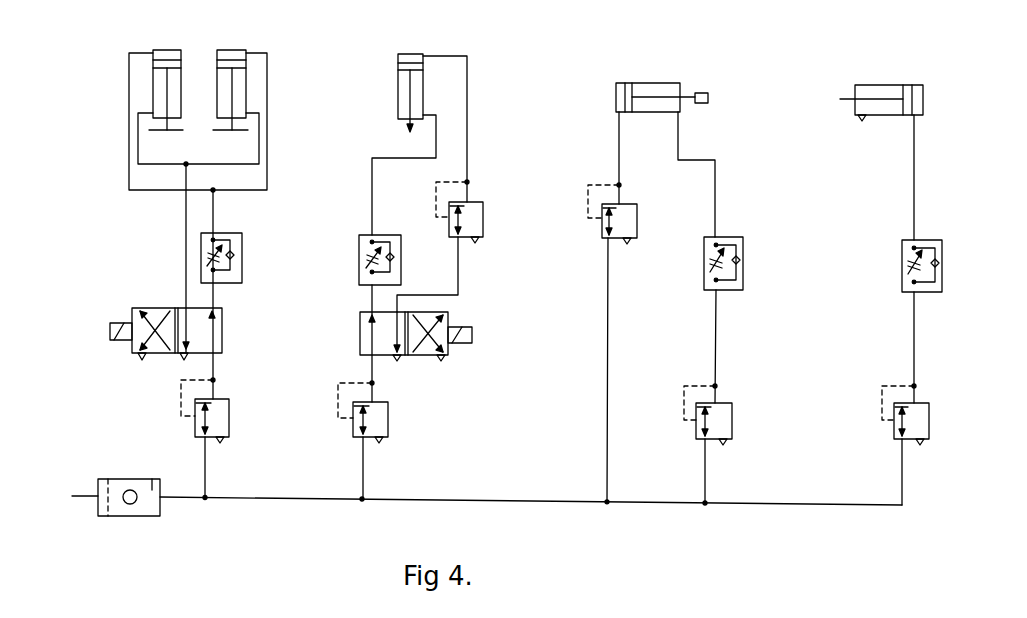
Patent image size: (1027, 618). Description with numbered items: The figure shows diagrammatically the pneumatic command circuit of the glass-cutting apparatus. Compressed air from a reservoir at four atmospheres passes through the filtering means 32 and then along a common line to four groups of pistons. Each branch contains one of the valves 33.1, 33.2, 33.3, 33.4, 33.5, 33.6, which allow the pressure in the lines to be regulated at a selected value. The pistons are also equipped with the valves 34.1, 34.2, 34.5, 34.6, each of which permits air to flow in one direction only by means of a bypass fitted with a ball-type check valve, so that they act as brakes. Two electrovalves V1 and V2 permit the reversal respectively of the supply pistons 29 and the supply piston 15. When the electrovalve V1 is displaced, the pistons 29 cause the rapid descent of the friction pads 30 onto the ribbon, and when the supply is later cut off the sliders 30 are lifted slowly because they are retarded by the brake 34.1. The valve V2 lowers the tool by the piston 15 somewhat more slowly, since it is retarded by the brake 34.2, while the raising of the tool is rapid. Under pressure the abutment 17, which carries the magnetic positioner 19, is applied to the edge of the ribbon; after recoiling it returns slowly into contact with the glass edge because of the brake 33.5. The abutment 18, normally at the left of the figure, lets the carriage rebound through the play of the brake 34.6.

The supply piston 15 is at (398, 52).
The abutment 17 is at (659, 68).
The abutment 18 is at (897, 68).
The magnetic positioner 19 is at (703, 93).
The supply pistons 29 is at (198, 78).
The friction pads 30 is at (218, 133).
The filtering means 32 is at (130, 516).
The pressure regulating valve 33.1 is at (231, 421).
The pressure regulating valve 33.2 is at (390, 424).
The pressure regulating valve 33.3 is at (485, 224).
The pressure regulating valve 33.4 is at (639, 226).
The pressure regulating valve 33.5 is at (734, 425).
The pressure regulating valve 33.6 is at (931, 425).
The one-way flow valve 34.1 is at (245, 258).
The one-way flow valve 34.2 is at (403, 260).
The one-way flow valve 34.5 is at (748, 263).
The one-way flow valve 34.6 is at (946, 266).
The electrovalve V1 is at (153, 321).
The electrovalve V2 is at (430, 325).